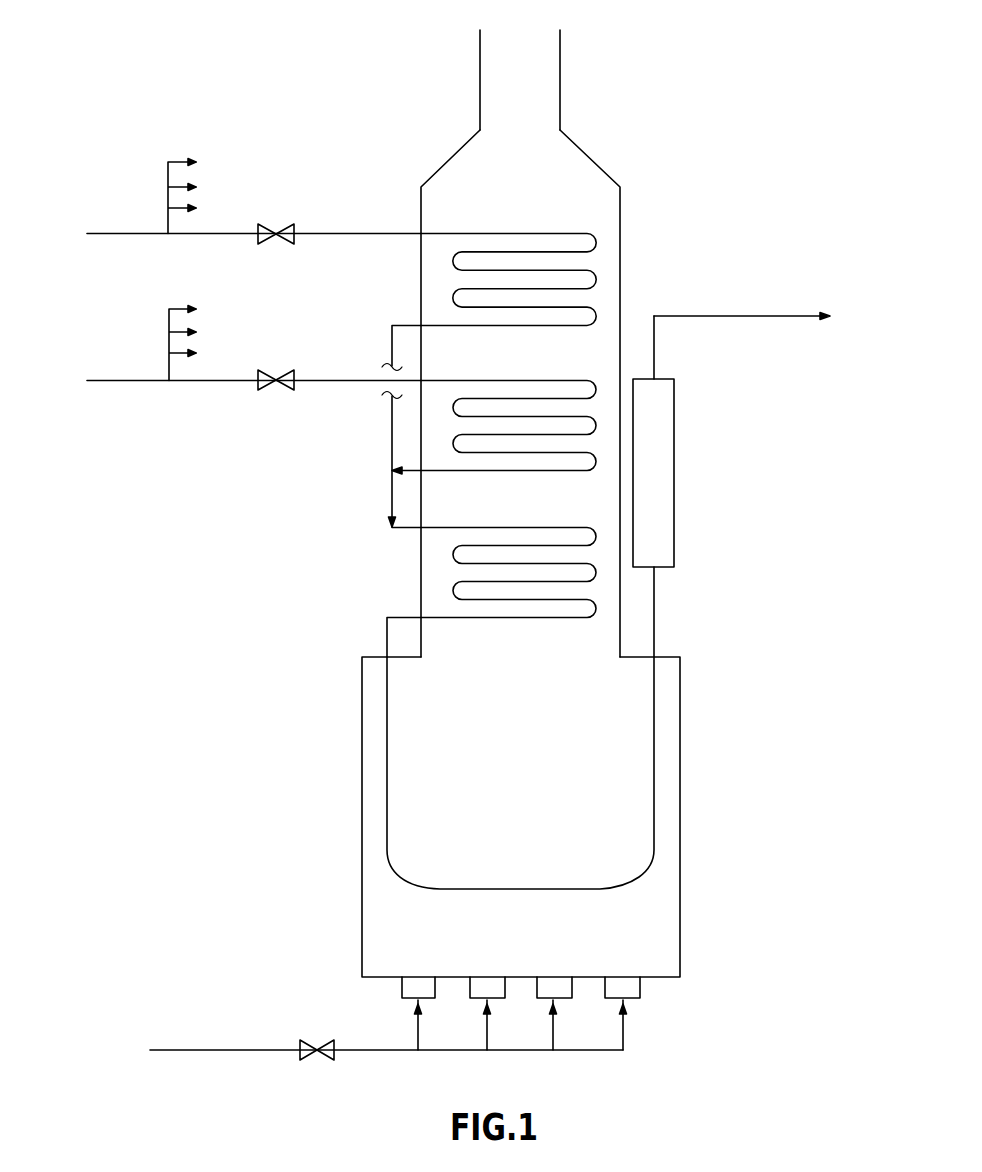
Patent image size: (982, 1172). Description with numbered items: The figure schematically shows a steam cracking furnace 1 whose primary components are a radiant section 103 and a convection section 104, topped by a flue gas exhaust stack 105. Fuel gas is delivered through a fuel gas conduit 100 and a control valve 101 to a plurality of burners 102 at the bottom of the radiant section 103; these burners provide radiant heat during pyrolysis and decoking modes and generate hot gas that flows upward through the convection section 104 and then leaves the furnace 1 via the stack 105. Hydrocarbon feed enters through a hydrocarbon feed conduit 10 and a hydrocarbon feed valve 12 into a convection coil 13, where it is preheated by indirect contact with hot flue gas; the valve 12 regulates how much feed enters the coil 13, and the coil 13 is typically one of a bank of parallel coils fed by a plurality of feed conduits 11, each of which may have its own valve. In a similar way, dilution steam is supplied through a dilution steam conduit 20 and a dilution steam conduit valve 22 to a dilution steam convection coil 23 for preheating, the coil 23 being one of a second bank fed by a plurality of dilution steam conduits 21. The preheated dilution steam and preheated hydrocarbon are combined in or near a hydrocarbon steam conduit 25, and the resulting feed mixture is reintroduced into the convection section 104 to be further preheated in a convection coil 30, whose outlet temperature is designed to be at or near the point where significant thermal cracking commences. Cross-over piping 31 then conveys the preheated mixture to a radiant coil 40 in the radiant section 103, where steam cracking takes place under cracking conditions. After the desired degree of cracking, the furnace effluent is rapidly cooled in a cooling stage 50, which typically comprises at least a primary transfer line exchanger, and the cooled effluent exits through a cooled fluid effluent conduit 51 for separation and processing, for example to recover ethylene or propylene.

The steam cracking furnace 1 is at (720, 153).
The hydrocarbon feed conduit 10 is at (115, 233).
The feed conduits 11 is at (165, 175).
The hydrocarbon feed valve 12 is at (281, 230).
The convection coil 13 is at (532, 233).
The dilution steam conduit 20 is at (117, 381).
The dilution steam conduits 21 is at (168, 322).
The dilution steam conduit valve 22 is at (283, 372).
The dilution steam convection coil 23 is at (530, 381).
The hydrocarbon steam conduit 25 is at (390, 493).
The convection coil 30 is at (529, 528).
The cross-over piping 31 is at (387, 625).
The radiant coil 40 is at (527, 887).
The cooling stage 50 is at (675, 403).
The cooled fluid effluent conduit 51 is at (772, 316).
The fuel gas conduit 100 is at (165, 1050).
The control valve 101 is at (307, 1040).
The burners 102 is at (633, 1000).
The radiant section 103 is at (362, 885).
The convection section 104 is at (420, 205).
The flue gas exhaust stack 105 is at (480, 70).